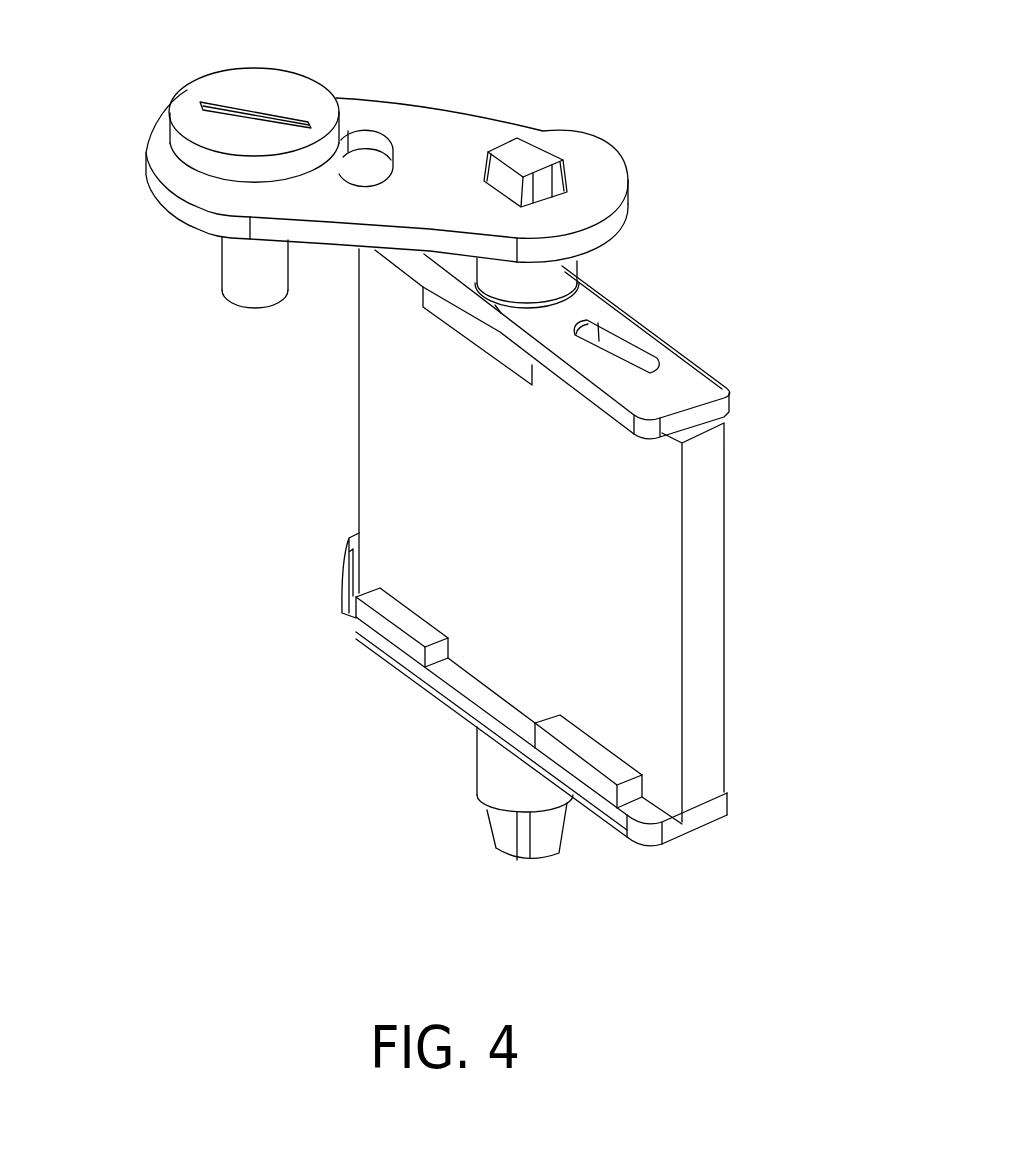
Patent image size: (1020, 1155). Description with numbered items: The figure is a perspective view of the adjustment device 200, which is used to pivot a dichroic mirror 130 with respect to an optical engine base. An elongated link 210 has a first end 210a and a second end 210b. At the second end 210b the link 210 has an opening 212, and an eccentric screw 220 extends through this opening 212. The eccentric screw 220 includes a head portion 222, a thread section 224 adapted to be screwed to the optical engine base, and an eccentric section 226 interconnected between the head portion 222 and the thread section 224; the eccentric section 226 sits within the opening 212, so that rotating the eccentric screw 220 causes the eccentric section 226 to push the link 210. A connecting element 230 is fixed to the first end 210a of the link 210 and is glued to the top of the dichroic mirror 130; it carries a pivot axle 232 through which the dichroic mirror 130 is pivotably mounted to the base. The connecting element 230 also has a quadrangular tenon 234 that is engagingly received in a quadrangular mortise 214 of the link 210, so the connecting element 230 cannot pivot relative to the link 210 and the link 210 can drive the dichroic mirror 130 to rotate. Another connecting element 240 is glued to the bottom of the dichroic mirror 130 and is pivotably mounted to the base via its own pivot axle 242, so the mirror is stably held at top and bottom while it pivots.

The adjustment device 200 is at (691, 59).
The link 210 is at (455, 140).
The first end of the link 210a is at (606, 196).
The second end of the link 210b is at (163, 167).
The opening 212 is at (339, 180).
The mortise 214 is at (549, 190).
The tenon 234 is at (527, 148).
The eccentric screw 220 is at (123, 306).
The head portion 222 is at (280, 174).
The thread section 224 is at (241, 280).
The eccentric section 226 is at (310, 170).
The connecting element 230 is at (691, 381).
The pivot axle 232 is at (562, 272).
The dichroic mirror 130 is at (643, 636).
The connecting element 240 is at (643, 810).
The pivot axle 242 is at (497, 768).